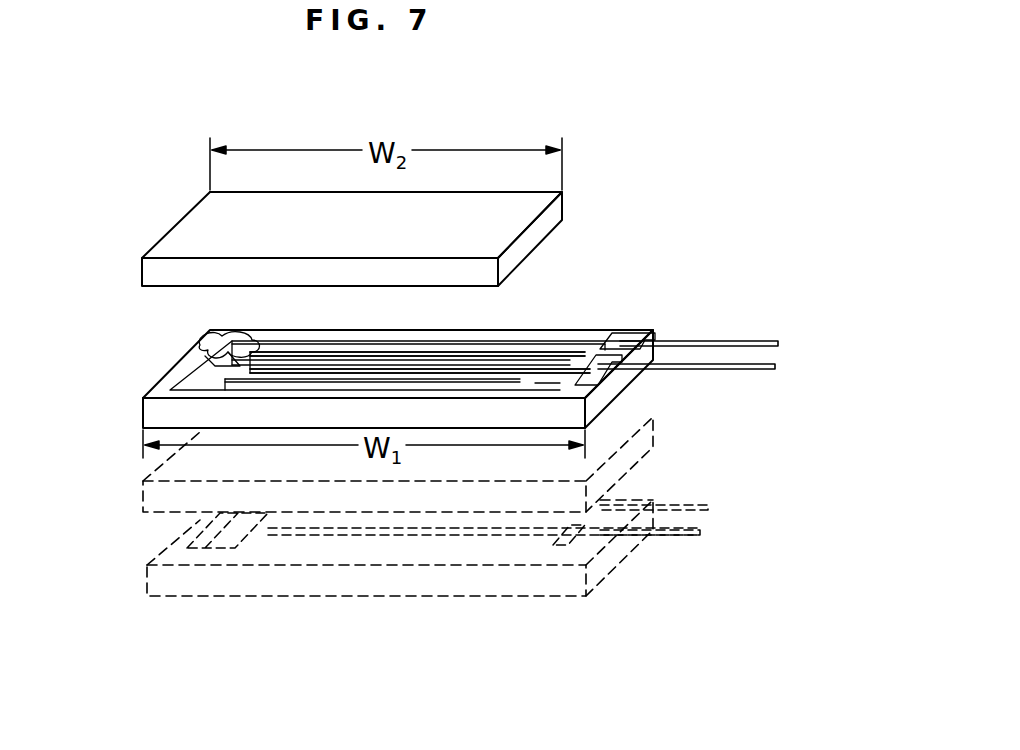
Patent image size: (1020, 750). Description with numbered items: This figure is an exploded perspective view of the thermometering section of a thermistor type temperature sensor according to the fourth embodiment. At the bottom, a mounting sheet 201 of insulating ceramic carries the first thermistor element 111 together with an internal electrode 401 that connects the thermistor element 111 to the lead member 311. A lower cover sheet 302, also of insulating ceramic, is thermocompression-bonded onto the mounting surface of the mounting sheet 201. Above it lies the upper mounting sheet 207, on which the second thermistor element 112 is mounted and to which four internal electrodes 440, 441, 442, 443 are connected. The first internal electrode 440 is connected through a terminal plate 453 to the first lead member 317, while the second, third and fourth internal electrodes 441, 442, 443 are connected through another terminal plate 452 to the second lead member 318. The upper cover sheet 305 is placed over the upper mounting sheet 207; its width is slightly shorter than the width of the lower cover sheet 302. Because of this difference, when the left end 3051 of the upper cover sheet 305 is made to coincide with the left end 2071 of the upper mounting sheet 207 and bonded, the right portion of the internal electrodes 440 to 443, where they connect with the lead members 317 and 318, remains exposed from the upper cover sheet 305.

The upper cover sheet 305 is at (548, 216).
The left end of upper cover sheet 3051 is at (190, 214).
The upper mounting sheet 207 is at (180, 366).
The left end of upper mounting sheet 2071 is at (142, 418).
The second thermistor element 112 is at (210, 342).
The first internal electrode 440 is at (548, 345).
The second internal electrode 441 is at (600, 350).
The third internal electrode 442 is at (333, 378).
The fourth internal electrode 443 is at (447, 387).
The terminal plate 453 is at (624, 346).
The terminal plate 452 is at (605, 370).
The first lead member 317 is at (765, 340).
The second lead member 318 is at (768, 372).
The lower cover sheet 302 is at (155, 495).
The mounting sheet 201 is at (330, 583).
The internal electrode 401 is at (466, 540).
The first thermistor element 111 is at (185, 540).
The lead member 311 is at (700, 516).